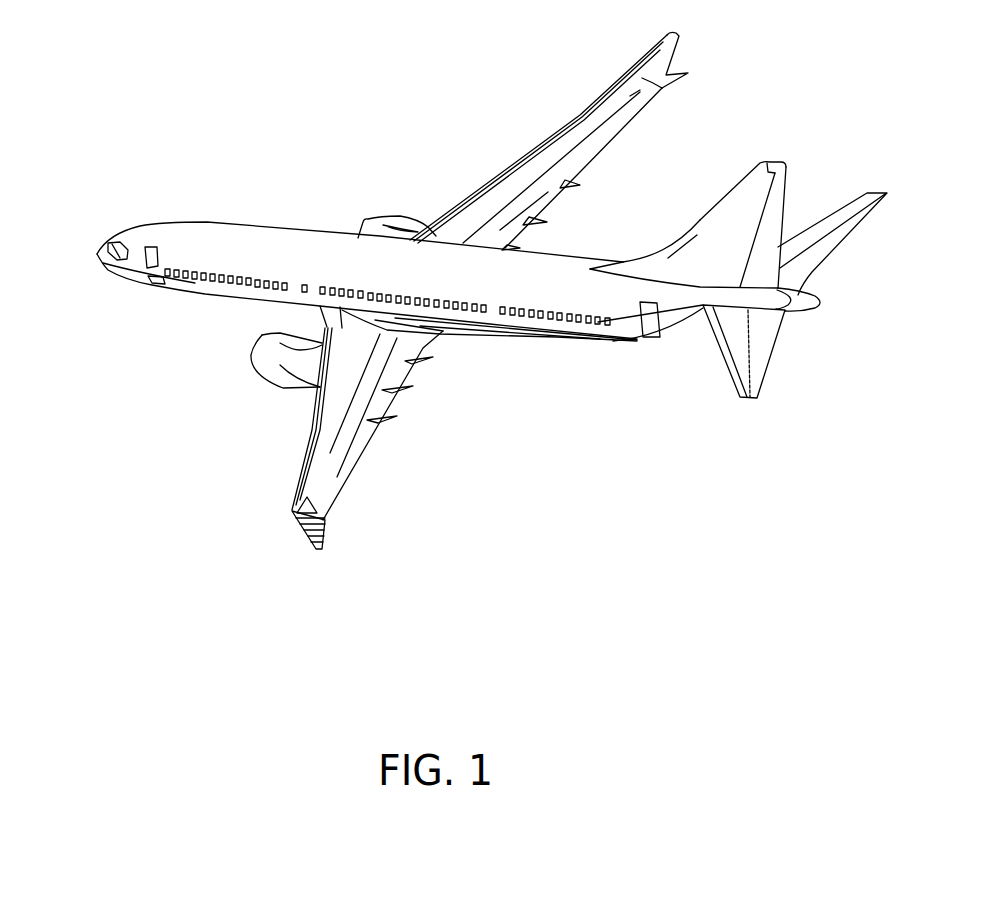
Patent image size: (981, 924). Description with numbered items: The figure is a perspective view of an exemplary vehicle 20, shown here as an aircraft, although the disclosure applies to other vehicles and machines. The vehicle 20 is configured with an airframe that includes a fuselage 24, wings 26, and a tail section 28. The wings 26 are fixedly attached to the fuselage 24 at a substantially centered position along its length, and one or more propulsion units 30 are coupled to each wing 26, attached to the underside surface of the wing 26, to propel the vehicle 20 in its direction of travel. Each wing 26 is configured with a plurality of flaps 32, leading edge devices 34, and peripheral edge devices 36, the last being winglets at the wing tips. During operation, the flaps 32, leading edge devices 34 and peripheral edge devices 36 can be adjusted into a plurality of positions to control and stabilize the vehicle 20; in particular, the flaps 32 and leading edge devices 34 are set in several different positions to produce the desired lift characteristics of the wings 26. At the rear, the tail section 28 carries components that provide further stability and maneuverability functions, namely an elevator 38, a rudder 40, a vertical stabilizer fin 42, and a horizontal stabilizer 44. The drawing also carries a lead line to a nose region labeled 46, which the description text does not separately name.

The vehicle 20 is at (215, 115).
The fuselage 24 is at (234, 250).
The wings 26 is at (518, 192).
The tail section 28 is at (808, 85).
The propulsion units 30 is at (405, 225).
The flaps 32 is at (580, 148).
The leading edge devices 34 is at (583, 125).
The peripheral edge devices 36 is at (665, 53).
The elevator 38 is at (813, 265).
The rudder 40 is at (773, 222).
The vertical stabilizer fin 42 is at (753, 190).
The horizontal stabilizer 44 is at (738, 367).
The nose 46 is at (98, 252).